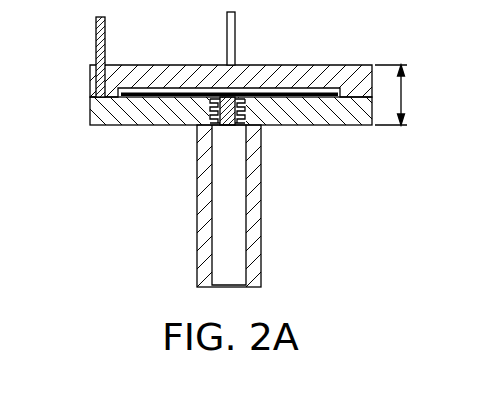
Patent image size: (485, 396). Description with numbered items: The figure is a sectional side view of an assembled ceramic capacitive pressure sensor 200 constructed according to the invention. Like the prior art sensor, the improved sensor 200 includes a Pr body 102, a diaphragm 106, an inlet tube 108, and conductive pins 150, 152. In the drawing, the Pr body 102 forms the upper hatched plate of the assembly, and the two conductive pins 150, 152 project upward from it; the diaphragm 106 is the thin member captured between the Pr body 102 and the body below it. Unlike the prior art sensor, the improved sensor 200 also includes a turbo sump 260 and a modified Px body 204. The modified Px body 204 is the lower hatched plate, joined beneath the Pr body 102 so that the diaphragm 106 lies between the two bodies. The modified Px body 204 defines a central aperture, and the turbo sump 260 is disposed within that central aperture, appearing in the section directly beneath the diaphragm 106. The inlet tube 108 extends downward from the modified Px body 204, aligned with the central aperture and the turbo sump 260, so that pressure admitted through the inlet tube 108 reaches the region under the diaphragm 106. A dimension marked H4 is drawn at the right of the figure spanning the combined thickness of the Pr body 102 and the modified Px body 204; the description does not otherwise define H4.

The Pr body 102 is at (90, 80).
The modified Px body 204 is at (90, 115).
The diaphragm 106 is at (305, 92).
The conductive pin 150 is at (106, 40).
The conductive pin 152 is at (235, 32).
The turbo sump 260 is at (235, 133).
The inlet tube 108 is at (262, 237).
The ceramic capacitive pressure sensor 200 is at (112, 180).
The height dimension H4 is at (408, 95).